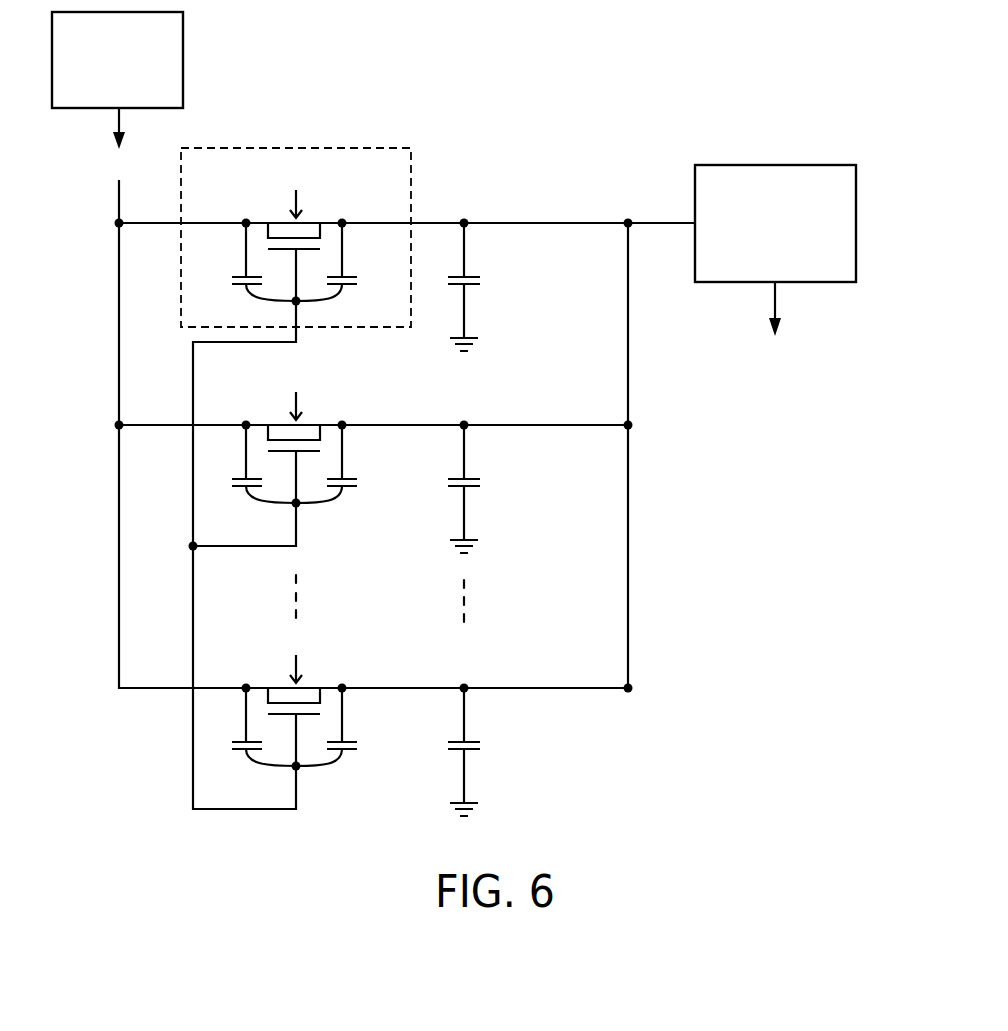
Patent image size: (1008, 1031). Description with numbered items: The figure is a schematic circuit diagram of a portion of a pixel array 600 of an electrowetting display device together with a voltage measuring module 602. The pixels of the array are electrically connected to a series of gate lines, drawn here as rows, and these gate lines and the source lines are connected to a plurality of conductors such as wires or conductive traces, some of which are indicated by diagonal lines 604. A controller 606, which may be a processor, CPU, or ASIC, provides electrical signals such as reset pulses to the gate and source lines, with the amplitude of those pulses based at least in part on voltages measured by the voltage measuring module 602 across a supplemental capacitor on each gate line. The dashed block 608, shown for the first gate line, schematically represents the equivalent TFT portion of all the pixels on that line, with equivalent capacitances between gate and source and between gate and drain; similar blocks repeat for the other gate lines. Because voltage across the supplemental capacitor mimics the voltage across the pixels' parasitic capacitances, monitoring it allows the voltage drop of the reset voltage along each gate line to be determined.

The pixel array 600 is at (610, 118).
The voltage measuring module 602 is at (757, 266).
The conductors 604 is at (139, 305).
The controller 606 is at (99, 84).
The block 608 is at (411, 200).